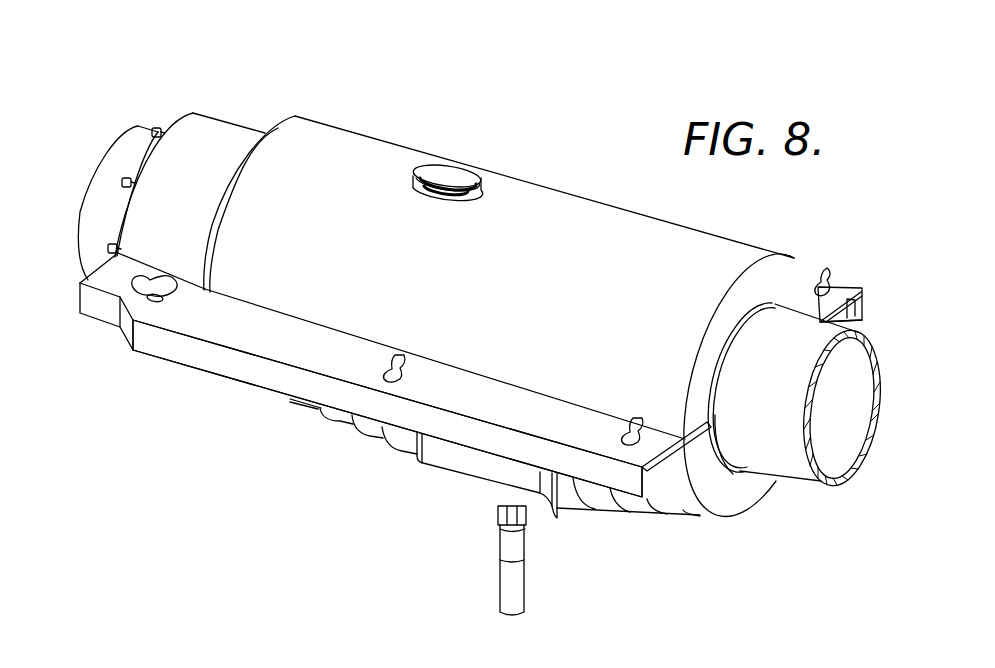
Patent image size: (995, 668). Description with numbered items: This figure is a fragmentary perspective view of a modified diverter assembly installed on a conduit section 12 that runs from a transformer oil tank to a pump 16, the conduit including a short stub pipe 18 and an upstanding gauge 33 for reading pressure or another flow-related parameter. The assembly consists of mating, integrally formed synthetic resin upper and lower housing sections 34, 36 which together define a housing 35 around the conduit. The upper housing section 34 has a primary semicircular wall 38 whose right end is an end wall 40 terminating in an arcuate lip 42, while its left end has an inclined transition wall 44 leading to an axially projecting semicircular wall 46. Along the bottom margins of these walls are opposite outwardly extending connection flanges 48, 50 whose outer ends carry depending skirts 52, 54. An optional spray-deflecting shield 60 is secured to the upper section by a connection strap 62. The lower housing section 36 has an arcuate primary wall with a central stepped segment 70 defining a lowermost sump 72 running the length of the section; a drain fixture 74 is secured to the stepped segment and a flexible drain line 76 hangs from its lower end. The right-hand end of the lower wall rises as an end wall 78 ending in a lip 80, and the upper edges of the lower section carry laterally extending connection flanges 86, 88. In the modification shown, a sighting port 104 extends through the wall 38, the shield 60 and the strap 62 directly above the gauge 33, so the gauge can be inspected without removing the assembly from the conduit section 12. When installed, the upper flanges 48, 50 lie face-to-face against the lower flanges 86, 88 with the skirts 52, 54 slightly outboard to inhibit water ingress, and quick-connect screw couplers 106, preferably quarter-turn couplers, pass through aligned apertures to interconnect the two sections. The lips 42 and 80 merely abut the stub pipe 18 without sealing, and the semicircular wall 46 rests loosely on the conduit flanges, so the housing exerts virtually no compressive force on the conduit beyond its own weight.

The conduit section 12 is at (826, 498).
The pump 16 is at (118, 147).
The stub pipe 18 is at (850, 444).
The gauge 33 is at (452, 192).
The upper housing section 34 is at (575, 190).
The housing 35 is at (367, 113).
The lower housing section 36 is at (638, 510).
The primary semicircular wall 38 is at (660, 225).
The end wall 40 is at (730, 313).
The arcuate lip 42 is at (748, 340).
The inclined transition wall 44 is at (228, 195).
The semicircular wall 46 is at (205, 126).
The connection flange 48 is at (840, 285).
The connection flange 50 is at (245, 320).
The depending skirt 52 is at (862, 312).
The depending skirt 54 is at (251, 380).
The spray-deflecting shield 60 is at (445, 172).
The connection strap 62 is at (418, 178).
The stepped segment 70 is at (372, 437).
The sump 72 is at (455, 472).
The drain fixture 74 is at (497, 509).
The drain line 76 is at (514, 587).
The end wall 78 is at (740, 500).
The lip 80 is at (722, 442).
The connection flange 86 is at (852, 320).
The connection flange 88 is at (664, 455).
The sighting port 104 is at (462, 172).
The quick-connect screw couplers 106 is at (632, 420).